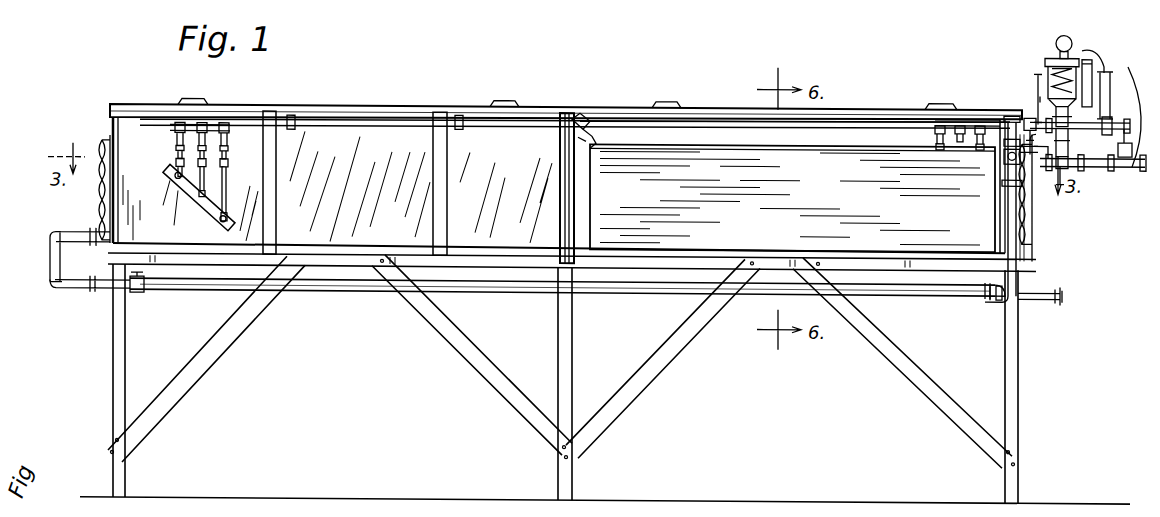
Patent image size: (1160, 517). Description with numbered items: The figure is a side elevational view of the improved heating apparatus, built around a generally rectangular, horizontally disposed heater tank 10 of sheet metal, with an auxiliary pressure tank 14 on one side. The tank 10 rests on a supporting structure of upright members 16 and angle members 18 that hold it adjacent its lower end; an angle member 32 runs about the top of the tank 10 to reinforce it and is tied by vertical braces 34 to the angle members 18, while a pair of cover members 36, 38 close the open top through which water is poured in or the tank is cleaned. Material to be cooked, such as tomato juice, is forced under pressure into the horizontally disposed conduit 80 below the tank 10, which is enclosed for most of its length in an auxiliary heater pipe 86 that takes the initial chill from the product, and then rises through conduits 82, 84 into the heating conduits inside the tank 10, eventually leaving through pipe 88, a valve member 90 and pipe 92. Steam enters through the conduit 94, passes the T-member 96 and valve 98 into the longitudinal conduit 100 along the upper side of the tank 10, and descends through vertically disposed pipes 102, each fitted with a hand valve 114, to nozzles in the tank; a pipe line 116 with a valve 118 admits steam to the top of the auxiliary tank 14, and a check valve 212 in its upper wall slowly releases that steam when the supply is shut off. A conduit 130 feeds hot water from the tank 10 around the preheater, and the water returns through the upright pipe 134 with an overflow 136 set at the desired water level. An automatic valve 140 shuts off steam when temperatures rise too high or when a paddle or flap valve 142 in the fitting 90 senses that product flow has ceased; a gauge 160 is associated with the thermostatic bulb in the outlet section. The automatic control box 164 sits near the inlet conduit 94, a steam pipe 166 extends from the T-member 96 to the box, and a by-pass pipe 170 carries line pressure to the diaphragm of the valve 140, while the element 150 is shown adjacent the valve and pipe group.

The heater tank 10 is at (524, 224).
The auxiliary pressure tank 14 is at (870, 218).
The upright members 16 is at (128, 466).
The angle members 18 is at (340, 265).
The angle member 32 is at (458, 112).
The vertical braces 34 is at (278, 200).
The cover member 36 is at (360, 118).
The cover member 38 is at (695, 112).
The horizontally disposed conduit 80 is at (1048, 300).
The conduit 82 is at (48, 278).
The pipe 84 is at (80, 232).
The auxiliary heater pipe 86 is at (516, 296).
The pipe 88 is at (1058, 170).
The valve member 90 is at (1078, 160).
The pipe 92 is at (1072, 164).
The conduit 94 is at (1126, 118).
The T-member 96 is at (1076, 142).
The valve 98 is at (1052, 104).
The longitudinal conduit 100 is at (745, 150).
The vertically disposed pipes 102 is at (172, 160).
The hand valves 114 is at (224, 138).
The pipe line 116 is at (940, 148).
The valve 118 is at (965, 140).
The conduit 130 is at (138, 290).
The upright pipe 134 is at (1020, 268).
The overflow 136 is at (1004, 160).
The automatic valve 140 is at (1048, 58).
The paddle or flap valve 142 is at (1064, 158).
The valve 150 is at (1110, 155).
The gauge 160 is at (1114, 60).
The automatic control box 164 is at (1010, 104).
The steam pipe 166 is at (1038, 68).
The by-pass pipe 170 is at (1078, 52).
The check valves 212 is at (585, 112).